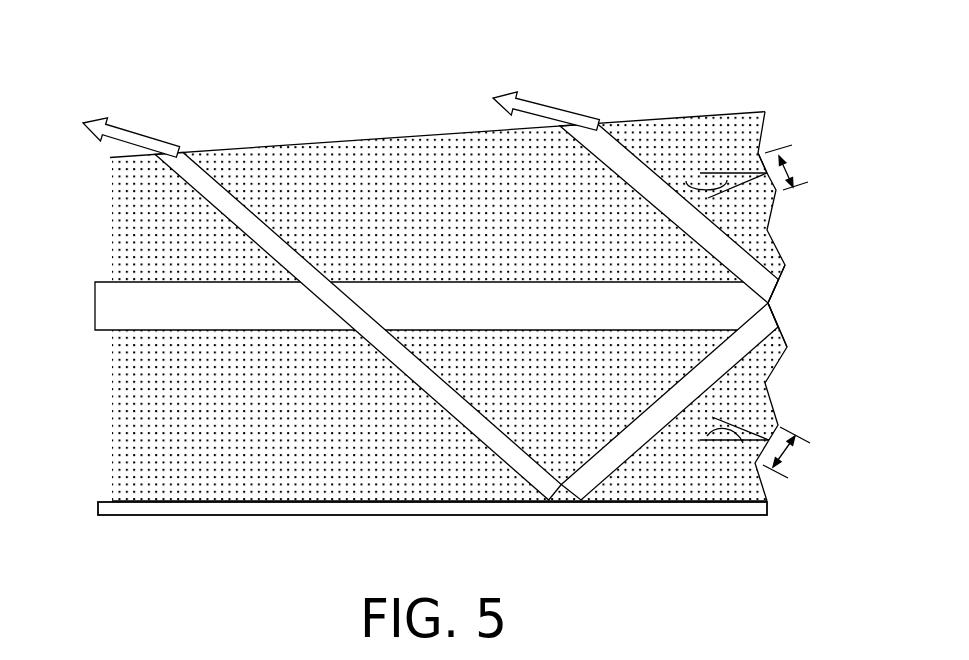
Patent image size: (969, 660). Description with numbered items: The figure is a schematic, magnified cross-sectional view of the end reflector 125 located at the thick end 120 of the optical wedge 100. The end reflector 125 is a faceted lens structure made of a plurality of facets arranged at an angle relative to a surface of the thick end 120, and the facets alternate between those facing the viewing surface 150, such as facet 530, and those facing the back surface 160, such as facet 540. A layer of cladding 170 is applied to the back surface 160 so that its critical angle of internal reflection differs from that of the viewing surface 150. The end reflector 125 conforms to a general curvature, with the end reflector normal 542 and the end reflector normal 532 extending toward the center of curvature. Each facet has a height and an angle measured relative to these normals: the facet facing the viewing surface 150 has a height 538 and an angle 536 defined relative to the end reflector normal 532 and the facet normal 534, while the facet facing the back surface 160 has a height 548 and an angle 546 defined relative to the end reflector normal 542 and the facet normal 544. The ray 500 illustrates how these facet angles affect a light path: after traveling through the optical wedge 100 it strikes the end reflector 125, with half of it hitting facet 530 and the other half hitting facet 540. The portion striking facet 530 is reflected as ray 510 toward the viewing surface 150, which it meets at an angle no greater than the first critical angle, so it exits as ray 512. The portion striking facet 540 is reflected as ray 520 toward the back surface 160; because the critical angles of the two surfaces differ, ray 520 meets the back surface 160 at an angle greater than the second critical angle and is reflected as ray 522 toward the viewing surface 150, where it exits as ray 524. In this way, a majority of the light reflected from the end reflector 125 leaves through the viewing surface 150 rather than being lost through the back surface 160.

The optical wedge 100 is at (242, 453).
The thick end 120 is at (757, 78).
The end reflector 125 is at (786, 215).
The viewing surface 150 is at (382, 139).
The back surface 160 is at (321, 501).
The cladding 170 is at (290, 508).
The ray 500 is at (94, 316).
The ray 510 is at (613, 157).
The ray 512 is at (543, 118).
The ray 520 is at (613, 458).
The ray 522 is at (508, 458).
The ray 524 is at (128, 140).
The facet 530 is at (782, 275).
The end reflector normal 532 is at (745, 447).
The facet normal 534 is at (751, 432).
The angle 536 is at (717, 442).
The height 538 is at (796, 452).
The facet 540 is at (780, 328).
The end reflector normal 542 is at (762, 167).
The facet normal 544 is at (751, 181).
The angle 546 is at (715, 174).
The height 548 is at (797, 167).